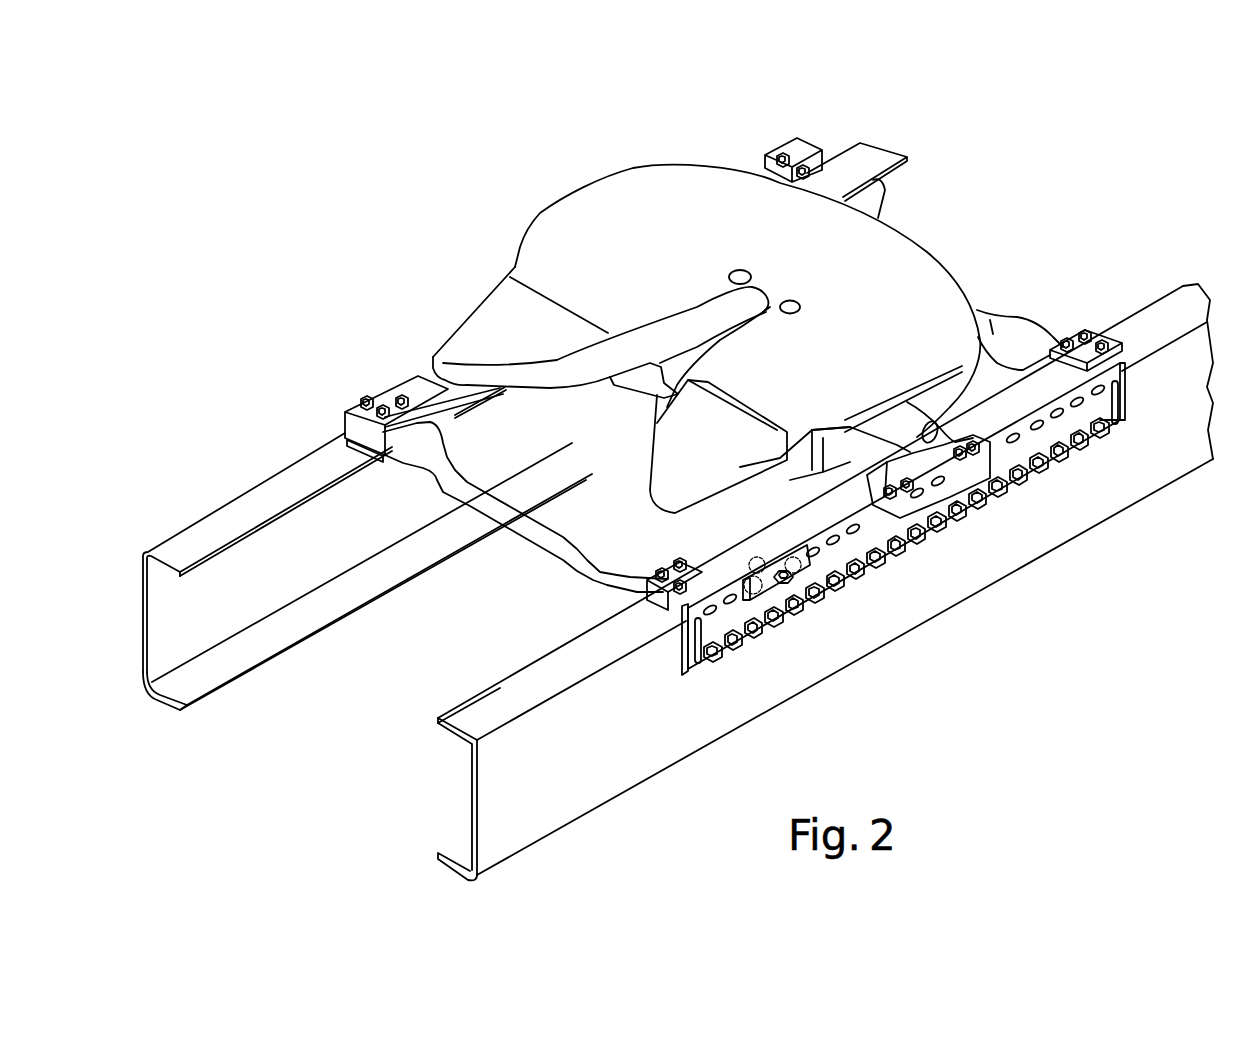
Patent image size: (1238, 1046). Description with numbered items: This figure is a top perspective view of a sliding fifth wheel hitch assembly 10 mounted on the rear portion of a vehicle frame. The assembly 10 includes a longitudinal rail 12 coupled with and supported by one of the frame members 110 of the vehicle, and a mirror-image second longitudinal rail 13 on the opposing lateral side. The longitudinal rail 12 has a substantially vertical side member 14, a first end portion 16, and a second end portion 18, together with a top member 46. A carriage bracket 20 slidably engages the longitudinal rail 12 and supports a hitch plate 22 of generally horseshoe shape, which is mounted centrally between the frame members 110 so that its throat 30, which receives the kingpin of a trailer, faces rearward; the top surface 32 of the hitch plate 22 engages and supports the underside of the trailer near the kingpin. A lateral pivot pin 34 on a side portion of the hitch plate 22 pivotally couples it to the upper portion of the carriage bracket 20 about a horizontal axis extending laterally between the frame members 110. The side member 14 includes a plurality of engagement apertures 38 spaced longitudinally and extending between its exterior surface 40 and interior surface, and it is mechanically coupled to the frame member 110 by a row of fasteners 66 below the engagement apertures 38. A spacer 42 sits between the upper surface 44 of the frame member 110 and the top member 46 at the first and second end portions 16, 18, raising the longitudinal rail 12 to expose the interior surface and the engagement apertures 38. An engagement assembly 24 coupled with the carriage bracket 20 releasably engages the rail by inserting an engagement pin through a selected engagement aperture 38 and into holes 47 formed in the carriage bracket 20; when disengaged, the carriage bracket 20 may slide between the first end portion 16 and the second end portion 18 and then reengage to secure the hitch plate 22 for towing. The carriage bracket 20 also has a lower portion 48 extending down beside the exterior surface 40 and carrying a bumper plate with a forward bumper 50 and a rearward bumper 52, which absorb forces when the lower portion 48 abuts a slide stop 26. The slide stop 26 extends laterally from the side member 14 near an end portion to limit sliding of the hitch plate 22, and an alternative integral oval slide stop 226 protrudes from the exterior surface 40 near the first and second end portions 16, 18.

The sliding fifth wheel hitch assembly 10 is at (645, 132).
The longitudinal rail 12 is at (788, 504).
The second longitudinal rail 13 is at (418, 385).
The substantially vertical side member 14 is at (1000, 462).
The first end portion 16 is at (744, 676).
The second end portion 18 is at (1102, 463).
The carriage bracket 20 is at (883, 512).
The hitch plate 22 is at (630, 267).
The engagement assembly 24 is at (800, 478).
The slide stop 26 is at (757, 598).
The throat 30 is at (778, 284).
The top surface 32 is at (738, 185).
The lateral pivot pin 34 is at (930, 423).
The engagement apertures 38 is at (1097, 387).
The exterior surface 40 is at (1090, 412).
The spacer 42 is at (363, 440).
The upper surface 44 is at (257, 508).
The top member 46 is at (1028, 390).
The holes 47 is at (940, 487).
The lower portion 48 is at (830, 457).
The forward bumper 50 is at (997, 442).
The rearward bumper 52 is at (835, 535).
The fasteners 66 is at (910, 473).
The frame members 110 is at (168, 617).
The slide stop 226 is at (690, 652).